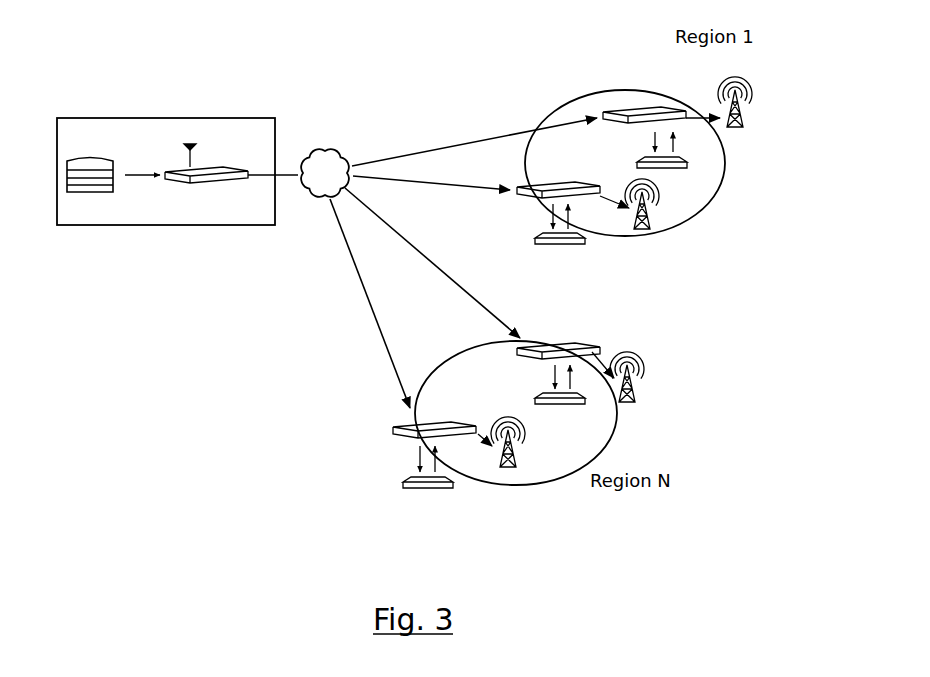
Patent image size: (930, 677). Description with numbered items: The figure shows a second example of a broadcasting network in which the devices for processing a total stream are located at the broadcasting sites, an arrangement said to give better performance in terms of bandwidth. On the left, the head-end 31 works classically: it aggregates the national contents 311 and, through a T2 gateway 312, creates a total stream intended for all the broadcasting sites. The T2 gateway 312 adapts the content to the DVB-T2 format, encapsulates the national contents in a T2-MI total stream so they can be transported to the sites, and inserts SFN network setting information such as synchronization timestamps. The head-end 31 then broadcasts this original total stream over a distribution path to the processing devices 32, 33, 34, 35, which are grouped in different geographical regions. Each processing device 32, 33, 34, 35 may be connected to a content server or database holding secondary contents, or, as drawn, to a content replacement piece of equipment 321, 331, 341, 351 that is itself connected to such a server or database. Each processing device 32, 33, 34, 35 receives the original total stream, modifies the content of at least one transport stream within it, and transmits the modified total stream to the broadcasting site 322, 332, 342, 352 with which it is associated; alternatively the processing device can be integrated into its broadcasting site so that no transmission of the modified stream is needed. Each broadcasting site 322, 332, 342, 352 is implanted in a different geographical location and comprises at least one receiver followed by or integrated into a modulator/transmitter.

The head-end 31 is at (150, 218).
The national contents 311 is at (93, 157).
The T2 gateway 312 is at (180, 167).
The processing device 32 is at (663, 107).
The content replacement piece of equipment 321 is at (687, 165).
The broadcasting site 322 is at (748, 118).
The processing device 33 is at (562, 190).
The content replacement piece of equipment 331 is at (555, 245).
The broadcasting site 332 is at (650, 221).
The processing device 34 is at (565, 348).
The content replacement piece of equipment 341 is at (560, 405).
The broadcasting site 342 is at (636, 397).
The processing device 35 is at (458, 421).
The content replacement piece of equipment 351 is at (422, 489).
The broadcasting site 352 is at (500, 466).